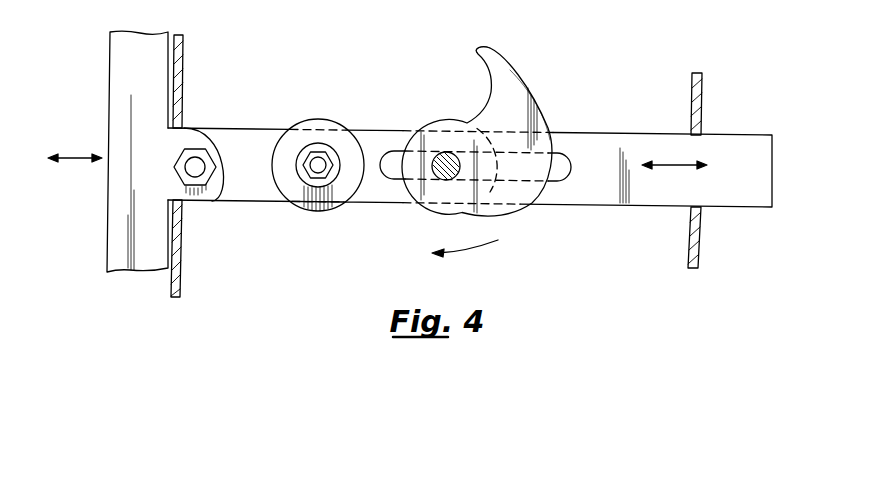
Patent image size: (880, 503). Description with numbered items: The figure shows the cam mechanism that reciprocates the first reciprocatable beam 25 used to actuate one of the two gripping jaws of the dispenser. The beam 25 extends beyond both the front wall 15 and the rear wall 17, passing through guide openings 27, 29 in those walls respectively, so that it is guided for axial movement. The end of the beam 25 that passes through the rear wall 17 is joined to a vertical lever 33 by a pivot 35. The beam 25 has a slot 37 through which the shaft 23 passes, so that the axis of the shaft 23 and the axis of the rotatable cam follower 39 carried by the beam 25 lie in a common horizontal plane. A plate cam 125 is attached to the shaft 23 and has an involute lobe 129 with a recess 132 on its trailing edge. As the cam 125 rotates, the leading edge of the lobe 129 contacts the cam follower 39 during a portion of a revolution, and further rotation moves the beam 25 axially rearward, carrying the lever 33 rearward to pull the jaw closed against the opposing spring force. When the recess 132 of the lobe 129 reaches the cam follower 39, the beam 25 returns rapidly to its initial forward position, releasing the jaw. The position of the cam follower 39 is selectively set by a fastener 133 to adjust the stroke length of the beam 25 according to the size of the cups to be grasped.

The front wall 15 is at (692, 87).
The rear wall 17 is at (183, 55).
The shaft 23 is at (440, 173).
The first reciprocatable beam 25 is at (603, 207).
The guide opening 27 is at (688, 210).
The guide opening 29 is at (186, 127).
The vertical lever 33 is at (110, 77).
The pivot 35 is at (203, 152).
The slot 37 is at (550, 183).
The cam follower 39 is at (303, 207).
The plate cam 125 is at (521, 115).
The involute lobe 129 is at (540, 100).
The recess 132 is at (488, 101).
The fastener 133 is at (320, 150).